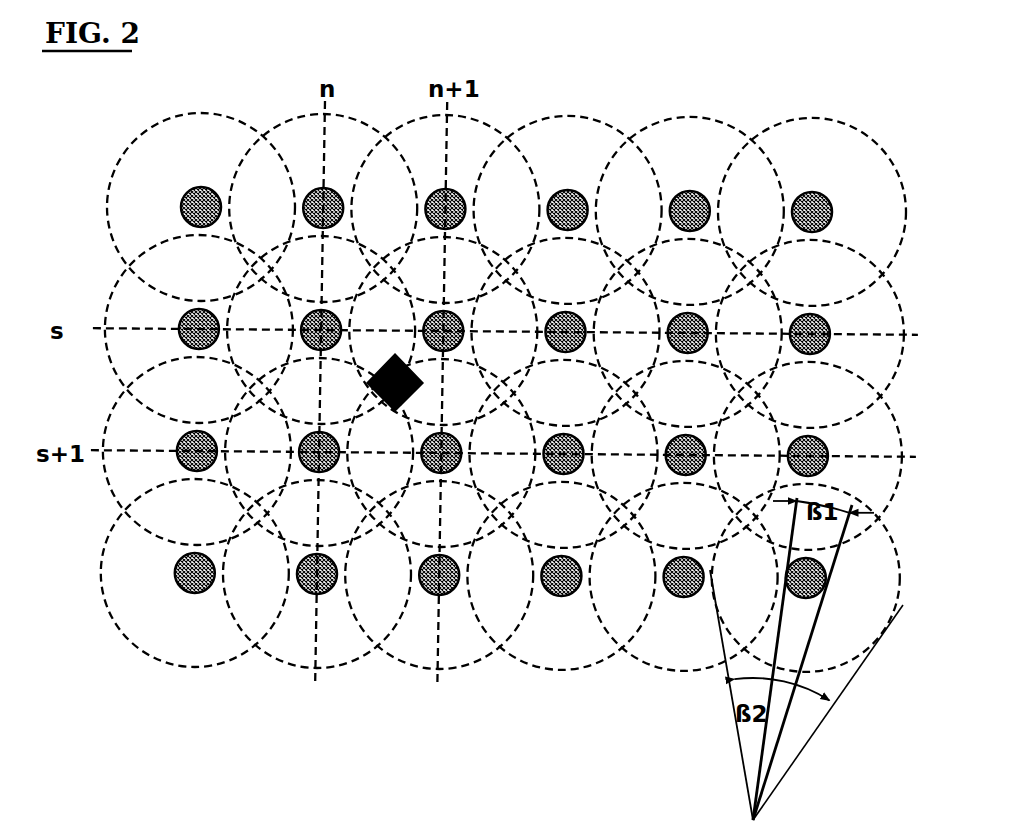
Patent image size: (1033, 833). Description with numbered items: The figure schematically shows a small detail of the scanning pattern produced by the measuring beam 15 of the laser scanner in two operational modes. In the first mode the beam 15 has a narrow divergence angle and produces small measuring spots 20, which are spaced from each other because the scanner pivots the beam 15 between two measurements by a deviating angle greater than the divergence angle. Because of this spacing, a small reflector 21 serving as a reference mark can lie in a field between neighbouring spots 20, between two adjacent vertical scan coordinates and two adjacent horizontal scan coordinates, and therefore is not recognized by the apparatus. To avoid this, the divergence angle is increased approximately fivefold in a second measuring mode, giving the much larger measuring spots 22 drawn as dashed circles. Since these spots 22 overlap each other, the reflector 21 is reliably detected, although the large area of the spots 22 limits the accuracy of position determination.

The beam 15 is at (824, 743).
The measuring spots 20 is at (204, 197).
The reflector 21 is at (386, 405).
The measuring spots 22 is at (168, 706).